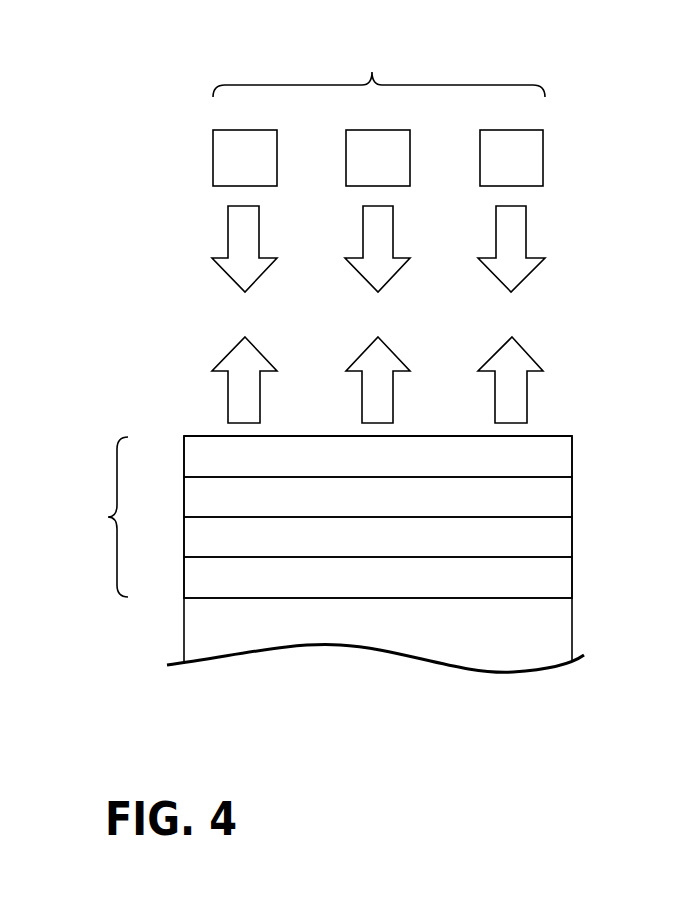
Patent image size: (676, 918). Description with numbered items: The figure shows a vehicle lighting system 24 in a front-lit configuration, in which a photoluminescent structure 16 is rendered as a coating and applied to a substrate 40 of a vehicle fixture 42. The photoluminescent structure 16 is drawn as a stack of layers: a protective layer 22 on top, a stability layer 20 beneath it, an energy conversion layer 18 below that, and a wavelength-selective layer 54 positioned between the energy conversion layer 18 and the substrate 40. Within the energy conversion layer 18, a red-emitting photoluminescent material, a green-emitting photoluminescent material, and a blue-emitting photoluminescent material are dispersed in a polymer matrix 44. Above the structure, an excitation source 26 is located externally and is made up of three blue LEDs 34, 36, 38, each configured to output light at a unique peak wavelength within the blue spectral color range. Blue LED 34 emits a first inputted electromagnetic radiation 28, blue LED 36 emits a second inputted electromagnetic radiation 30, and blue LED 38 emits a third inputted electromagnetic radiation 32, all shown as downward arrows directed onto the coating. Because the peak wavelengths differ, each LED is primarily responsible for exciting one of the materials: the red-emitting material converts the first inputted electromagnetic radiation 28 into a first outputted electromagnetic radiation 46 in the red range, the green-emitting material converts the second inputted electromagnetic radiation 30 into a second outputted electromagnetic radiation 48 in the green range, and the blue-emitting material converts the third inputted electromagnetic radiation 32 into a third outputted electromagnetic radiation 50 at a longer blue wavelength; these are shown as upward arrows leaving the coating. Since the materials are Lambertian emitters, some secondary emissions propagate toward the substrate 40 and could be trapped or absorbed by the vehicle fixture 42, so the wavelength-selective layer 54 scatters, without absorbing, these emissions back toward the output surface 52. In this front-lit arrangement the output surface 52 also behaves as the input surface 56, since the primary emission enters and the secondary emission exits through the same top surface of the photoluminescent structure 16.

The photoluminescent structure 16 is at (322, 517).
The energy conversion layer 18 is at (572, 538).
The stability layer 20 is at (572, 493).
The protective layer 22 is at (572, 460).
The vehicle lighting system 24 is at (125, 254).
The excitation source 26 is at (379, 71).
The first inputted electromagnetic radiation 28 is at (228, 232).
The second inputted electromagnetic radiation 30 is at (362, 232).
The third inputted electromagnetic radiation 32 is at (526, 238).
The blue LED 34 is at (236, 172).
The blue LED 36 is at (369, 172).
The blue LED 38 is at (502, 172).
The substrate 40 is at (512, 600).
The vehicle fixture 42 is at (183, 620).
The polymer matrix 44 is at (364, 553).
The first outputted electromagnetic radiation 46 is at (227, 355).
The second outputted electromagnetic radiation 48 is at (362, 398).
The third outputted electromagnetic radiation 50 is at (530, 357).
The output surface 52 is at (565, 437).
The wavelength-selective layer 54 is at (572, 578).
The input surface 56 is at (533, 437).